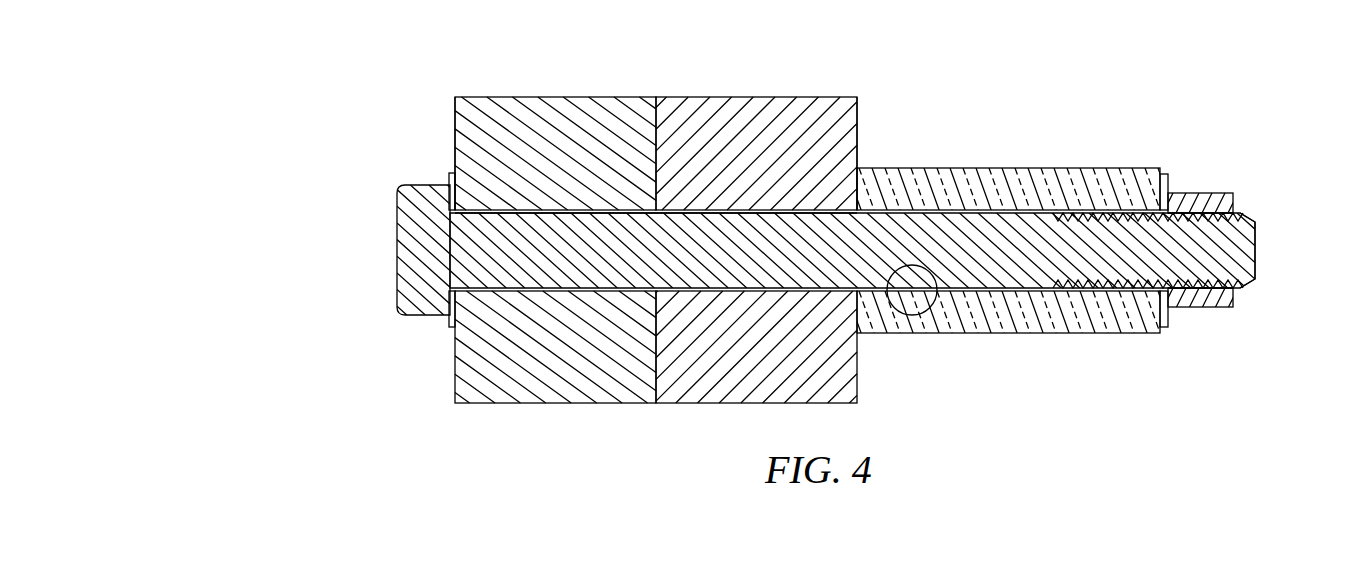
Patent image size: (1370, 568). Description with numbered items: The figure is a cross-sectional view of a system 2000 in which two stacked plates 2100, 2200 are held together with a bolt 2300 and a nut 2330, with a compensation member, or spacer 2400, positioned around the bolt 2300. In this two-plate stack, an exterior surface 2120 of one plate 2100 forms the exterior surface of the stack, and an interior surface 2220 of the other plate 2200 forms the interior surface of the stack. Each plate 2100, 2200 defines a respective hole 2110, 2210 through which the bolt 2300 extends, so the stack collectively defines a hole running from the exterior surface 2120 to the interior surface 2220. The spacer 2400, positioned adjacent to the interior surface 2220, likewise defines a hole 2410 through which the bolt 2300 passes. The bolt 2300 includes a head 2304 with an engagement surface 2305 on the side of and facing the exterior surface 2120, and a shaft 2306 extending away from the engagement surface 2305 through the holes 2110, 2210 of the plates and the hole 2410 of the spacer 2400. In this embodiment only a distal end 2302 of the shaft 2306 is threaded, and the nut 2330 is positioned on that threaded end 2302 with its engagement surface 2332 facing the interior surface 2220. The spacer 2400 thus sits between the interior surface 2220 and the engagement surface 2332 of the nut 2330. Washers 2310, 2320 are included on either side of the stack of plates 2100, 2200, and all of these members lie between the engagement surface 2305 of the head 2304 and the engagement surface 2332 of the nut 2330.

The system 2000 is at (312, 46).
The plate 2100 is at (497, 97).
The hole 2110 is at (560, 291).
The exterior surface 2120 is at (455, 100).
The plate 2200 is at (697, 97).
The hole 2210 is at (718, 291).
The interior surface 2220 is at (858, 108).
The bolt 2300 is at (740, 213).
The distal end 2302 is at (1245, 212).
The head 2304 is at (422, 315).
The engagement surface 2305 is at (460, 327).
The shaft 2306 is at (595, 210).
The washer 2310 is at (451, 175).
The washer 2320 is at (1165, 174).
The nut 2330 is at (1195, 308).
The engagement surface 2332 is at (1163, 302).
The spacer 2400 is at (918, 168).
The hole 2410 is at (920, 334).